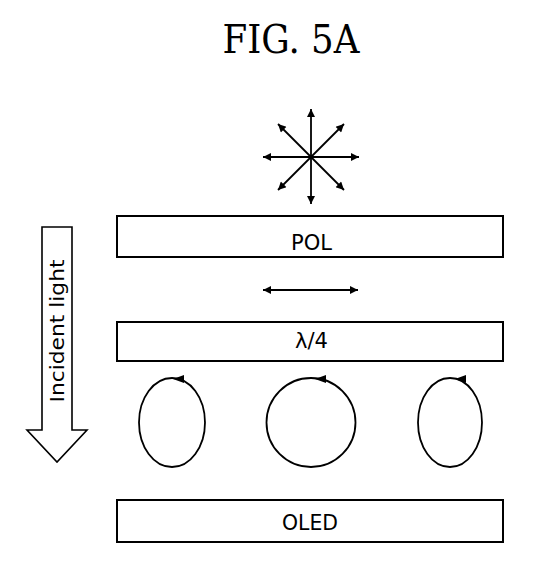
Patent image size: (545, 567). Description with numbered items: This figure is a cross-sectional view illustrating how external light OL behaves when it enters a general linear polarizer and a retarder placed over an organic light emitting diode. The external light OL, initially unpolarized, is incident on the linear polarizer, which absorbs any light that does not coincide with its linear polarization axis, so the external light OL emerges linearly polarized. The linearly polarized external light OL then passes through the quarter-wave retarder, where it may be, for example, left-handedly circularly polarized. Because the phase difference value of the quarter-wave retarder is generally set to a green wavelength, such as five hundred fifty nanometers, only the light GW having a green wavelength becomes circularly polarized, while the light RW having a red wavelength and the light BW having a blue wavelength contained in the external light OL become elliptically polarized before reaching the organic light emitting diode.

The external light OL is at (337, 153).
The light having a red wavelength RW is at (198, 445).
The light having a green wavelength GW is at (348, 445).
The light having a blue wavelength BW is at (477, 445).